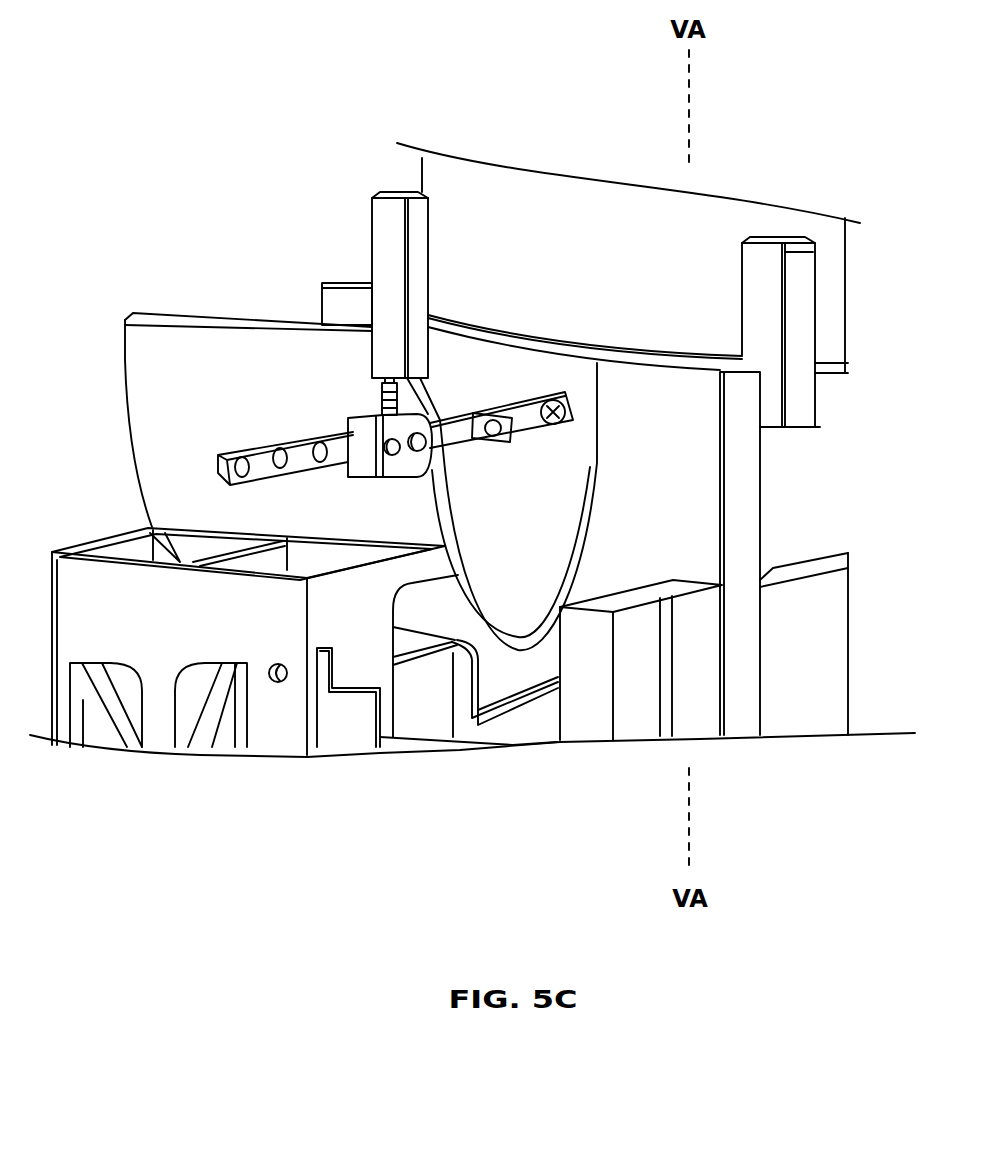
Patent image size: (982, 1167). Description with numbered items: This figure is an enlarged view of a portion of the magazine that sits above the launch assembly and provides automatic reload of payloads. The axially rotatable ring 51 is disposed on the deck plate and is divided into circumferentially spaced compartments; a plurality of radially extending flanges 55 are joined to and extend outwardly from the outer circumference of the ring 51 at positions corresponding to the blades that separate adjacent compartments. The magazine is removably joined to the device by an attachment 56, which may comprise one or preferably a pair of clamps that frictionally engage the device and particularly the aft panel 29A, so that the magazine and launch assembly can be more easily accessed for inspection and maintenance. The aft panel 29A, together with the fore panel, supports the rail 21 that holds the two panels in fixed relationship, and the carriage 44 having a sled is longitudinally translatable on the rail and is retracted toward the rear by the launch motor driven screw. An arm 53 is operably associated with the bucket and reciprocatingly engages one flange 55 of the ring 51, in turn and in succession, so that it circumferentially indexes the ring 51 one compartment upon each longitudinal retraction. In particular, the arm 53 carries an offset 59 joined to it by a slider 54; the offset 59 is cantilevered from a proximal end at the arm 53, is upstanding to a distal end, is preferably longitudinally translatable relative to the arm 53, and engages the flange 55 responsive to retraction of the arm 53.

The rail 21 is at (390, 742).
The aft panel 29A is at (803, 685).
The carriage 44 is at (266, 358).
The ring 51 is at (510, 220).
The arm 53 is at (260, 460).
The slider 54 is at (410, 462).
The flange 55 is at (390, 220).
The attachment 56 is at (642, 708).
The offset 59 is at (380, 390).